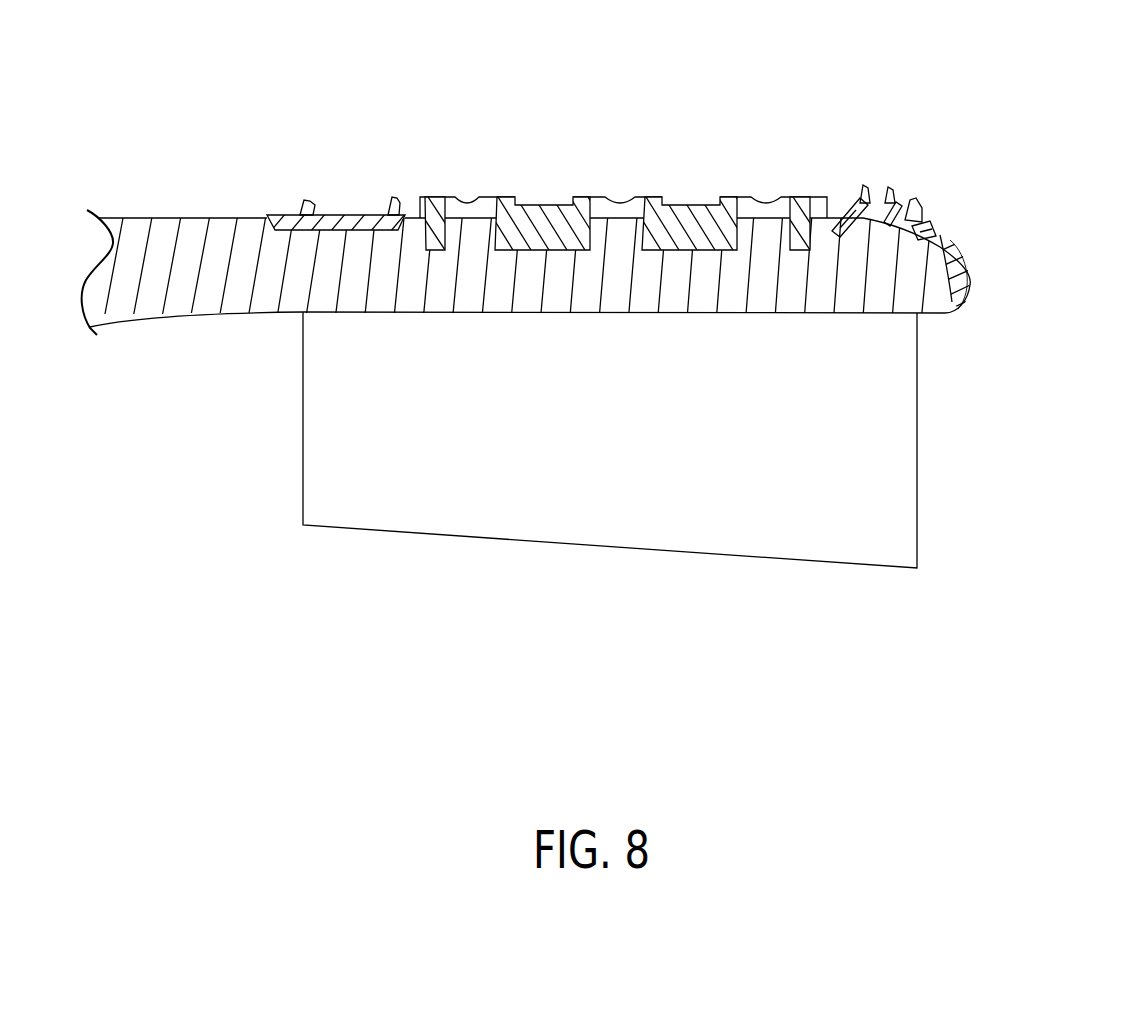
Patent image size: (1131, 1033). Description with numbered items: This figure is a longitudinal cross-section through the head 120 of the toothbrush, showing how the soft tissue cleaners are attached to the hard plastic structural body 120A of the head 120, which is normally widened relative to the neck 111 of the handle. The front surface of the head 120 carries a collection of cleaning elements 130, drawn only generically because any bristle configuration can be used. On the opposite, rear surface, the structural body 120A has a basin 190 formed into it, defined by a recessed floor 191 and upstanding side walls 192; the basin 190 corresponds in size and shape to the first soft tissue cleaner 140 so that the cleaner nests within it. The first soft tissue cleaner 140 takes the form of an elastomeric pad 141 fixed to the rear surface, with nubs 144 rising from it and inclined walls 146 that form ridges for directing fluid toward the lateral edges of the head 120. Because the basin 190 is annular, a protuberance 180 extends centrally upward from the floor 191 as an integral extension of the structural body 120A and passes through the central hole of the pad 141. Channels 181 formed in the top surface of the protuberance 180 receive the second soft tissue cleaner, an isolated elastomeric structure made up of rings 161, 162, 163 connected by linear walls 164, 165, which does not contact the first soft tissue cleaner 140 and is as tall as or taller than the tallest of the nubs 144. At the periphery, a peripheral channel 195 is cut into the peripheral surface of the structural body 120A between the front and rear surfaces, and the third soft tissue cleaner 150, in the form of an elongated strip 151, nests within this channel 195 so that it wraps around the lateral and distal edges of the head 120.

The neck 111 is at (145, 257).
The head 120 is at (594, 239).
The structural body 120A is at (877, 302).
The collection of cleaning elements 130 is at (933, 528).
The first soft tissue cleaner 140 is at (285, 200).
The pad 141 is at (923, 223).
The nubs 144 is at (288, 202).
The inclined walls 146 is at (832, 213).
The third soft tissue cleaner 150 is at (1019, 272).
The elongated strip 151 is at (983, 250).
The ring 161 is at (747, 216).
The ring 162 is at (602, 197).
The ring 163 is at (433, 197).
The linear wall 164 is at (708, 207).
The linear wall 165 is at (555, 205).
The protuberance 180 is at (415, 207).
The channels 181 is at (435, 235).
The basin 190 is at (317, 203).
The recessed floor 191 is at (370, 230).
The upstanding side walls 192 is at (294, 228).
The peripheral channel 195 is at (985, 283).